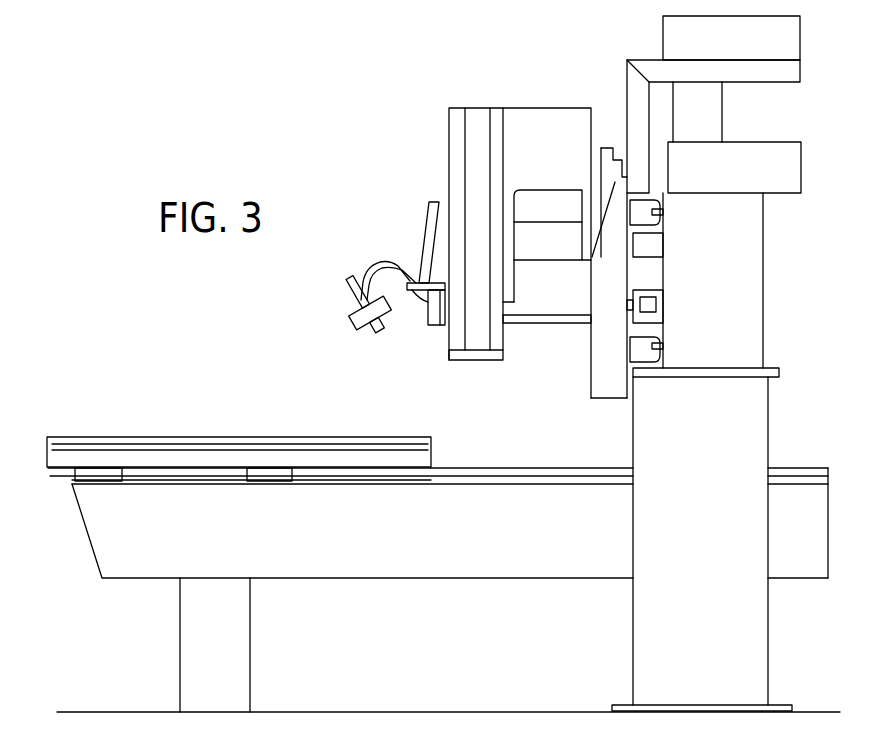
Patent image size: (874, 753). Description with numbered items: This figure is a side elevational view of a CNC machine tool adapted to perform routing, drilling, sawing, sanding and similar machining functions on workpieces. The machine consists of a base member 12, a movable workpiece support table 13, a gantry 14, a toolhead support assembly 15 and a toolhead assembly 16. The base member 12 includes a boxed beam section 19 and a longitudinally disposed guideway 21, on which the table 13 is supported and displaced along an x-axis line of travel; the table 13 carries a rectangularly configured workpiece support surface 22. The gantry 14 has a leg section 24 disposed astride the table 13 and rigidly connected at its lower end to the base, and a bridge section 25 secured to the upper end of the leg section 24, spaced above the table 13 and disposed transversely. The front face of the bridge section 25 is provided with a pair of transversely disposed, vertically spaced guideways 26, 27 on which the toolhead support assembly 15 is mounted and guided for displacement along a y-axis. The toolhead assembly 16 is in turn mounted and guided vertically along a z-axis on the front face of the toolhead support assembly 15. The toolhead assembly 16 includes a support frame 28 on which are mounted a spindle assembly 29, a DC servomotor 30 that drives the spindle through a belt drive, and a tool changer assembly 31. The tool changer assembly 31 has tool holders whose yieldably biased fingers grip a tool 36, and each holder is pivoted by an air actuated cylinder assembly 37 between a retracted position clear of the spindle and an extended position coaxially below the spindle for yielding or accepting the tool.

The base member 12 is at (180, 648).
The workpiece support table 13 is at (165, 486).
The gantry 14 is at (768, 346).
The toolhead support assembly 15 is at (628, 258).
The toolhead assembly 16 is at (449, 190).
The boxed beam section 19 is at (417, 579).
The guideway 21 is at (502, 485).
The workpiece support surface 22 is at (193, 437).
The leg section 24 is at (768, 442).
The bridge section 25 is at (765, 258).
The guideway 26 is at (660, 211).
The guideway 27 is at (662, 346).
The support frame 28 is at (542, 324).
The spindle assembly 29 is at (449, 148).
The DC servomotor 30 is at (547, 190).
The tool changer assembly 31 is at (350, 294).
The tool 36 is at (375, 337).
The air actuated cylinder assembly 37 is at (427, 236).